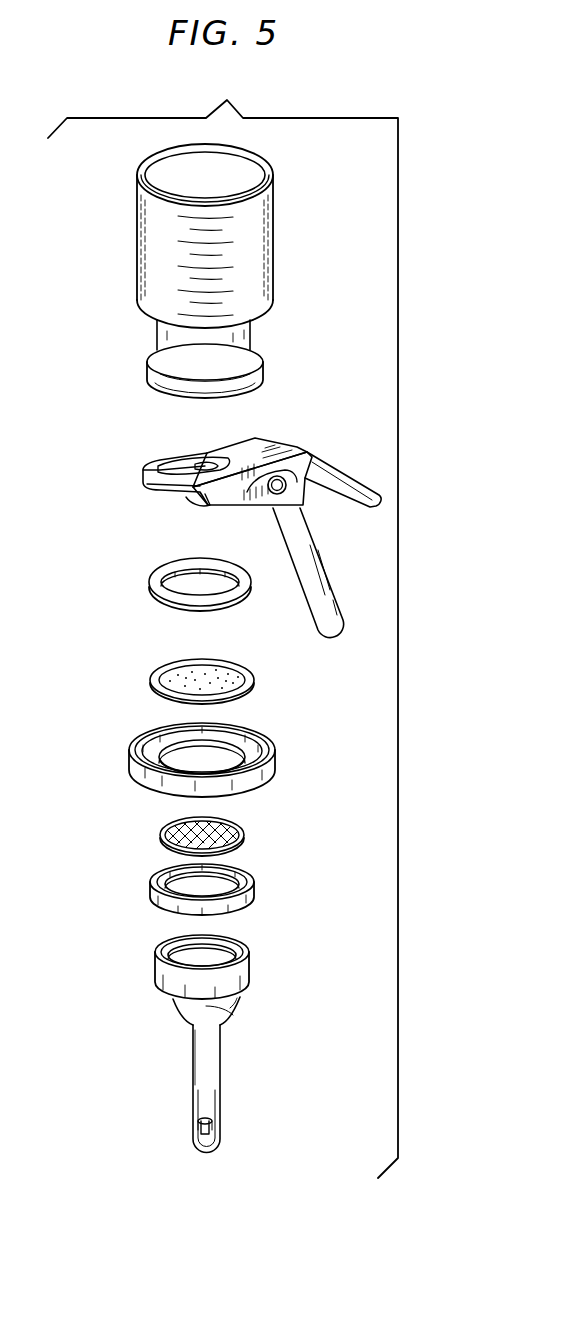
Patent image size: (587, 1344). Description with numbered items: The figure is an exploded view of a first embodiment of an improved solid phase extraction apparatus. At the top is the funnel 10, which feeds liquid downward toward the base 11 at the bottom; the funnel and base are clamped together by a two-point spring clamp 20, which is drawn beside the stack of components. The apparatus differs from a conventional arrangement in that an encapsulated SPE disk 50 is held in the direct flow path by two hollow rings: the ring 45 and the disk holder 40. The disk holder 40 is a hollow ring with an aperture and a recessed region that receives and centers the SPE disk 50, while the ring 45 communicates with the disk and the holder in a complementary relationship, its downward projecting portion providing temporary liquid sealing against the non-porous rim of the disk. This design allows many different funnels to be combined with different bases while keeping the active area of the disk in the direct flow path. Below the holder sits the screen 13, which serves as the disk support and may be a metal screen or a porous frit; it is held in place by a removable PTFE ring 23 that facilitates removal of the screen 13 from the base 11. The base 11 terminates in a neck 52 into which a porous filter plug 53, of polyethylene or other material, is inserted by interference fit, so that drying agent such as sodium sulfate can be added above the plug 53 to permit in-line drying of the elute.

The funnel 10 is at (273, 243).
The two-point spring clamp 20 is at (333, 462).
The hollow ring 45 is at (152, 578).
The encapsulated SPE disk 50 is at (150, 683).
The disk holder 40 is at (277, 771).
The disk support 13 is at (247, 838).
The removable PTFE ring 23 is at (256, 890).
The base 11 is at (240, 1003).
The neck 52 is at (220, 1080).
The porous filter plug 53 is at (212, 1125).